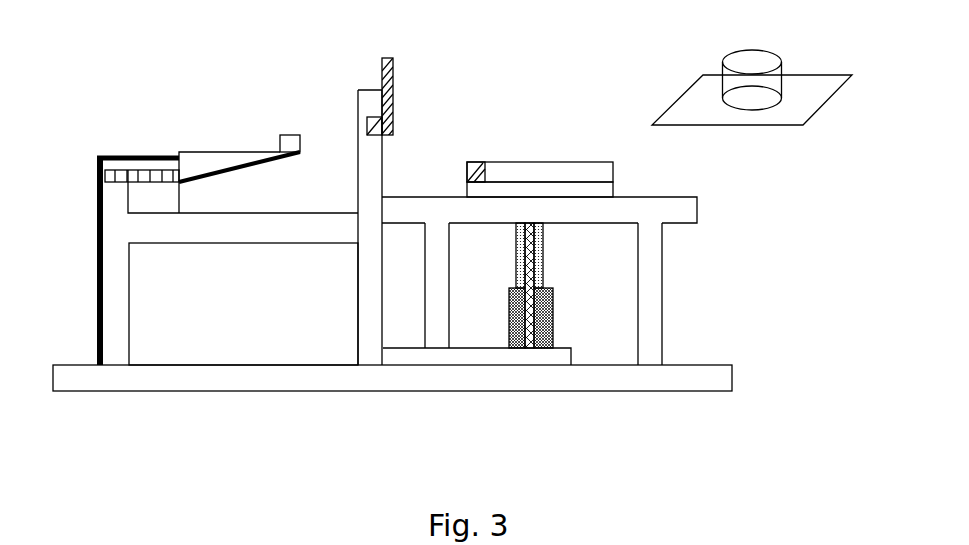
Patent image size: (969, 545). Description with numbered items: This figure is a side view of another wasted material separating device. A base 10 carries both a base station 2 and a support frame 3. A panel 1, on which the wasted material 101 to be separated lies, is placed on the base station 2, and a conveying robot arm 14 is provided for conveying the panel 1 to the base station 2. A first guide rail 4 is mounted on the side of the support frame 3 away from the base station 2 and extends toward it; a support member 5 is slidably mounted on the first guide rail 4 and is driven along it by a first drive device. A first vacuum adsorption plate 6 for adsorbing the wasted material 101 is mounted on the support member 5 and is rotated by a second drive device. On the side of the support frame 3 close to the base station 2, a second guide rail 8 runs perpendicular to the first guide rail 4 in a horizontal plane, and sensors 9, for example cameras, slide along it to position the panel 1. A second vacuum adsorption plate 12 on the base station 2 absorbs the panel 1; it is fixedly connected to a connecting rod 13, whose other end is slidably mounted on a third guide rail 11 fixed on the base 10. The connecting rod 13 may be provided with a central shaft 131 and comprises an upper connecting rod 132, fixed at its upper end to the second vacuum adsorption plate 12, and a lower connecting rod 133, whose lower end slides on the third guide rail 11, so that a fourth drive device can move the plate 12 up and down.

The panel 1 is at (565, 162).
The wasted material 101 is at (475, 162).
The second vacuum adsorption plate 12 is at (600, 193).
The base station 2 is at (678, 198).
The support frame 3 is at (112, 263).
The first guide rail 4 is at (128, 180).
The support member 5 is at (205, 152).
The first vacuum adsorption plate 6 is at (292, 140).
The second guide rail 8 is at (393, 110).
The sensor 9 is at (393, 75).
The base 10 is at (712, 380).
The third guide rail 11 is at (535, 357).
The connecting rod 13 is at (531, 285).
The central shaft 131 is at (532, 243).
The upper connecting rod 132 is at (538, 272).
The lower connecting rod 133 is at (553, 313).
The conveying robot arm 14 is at (803, 75).